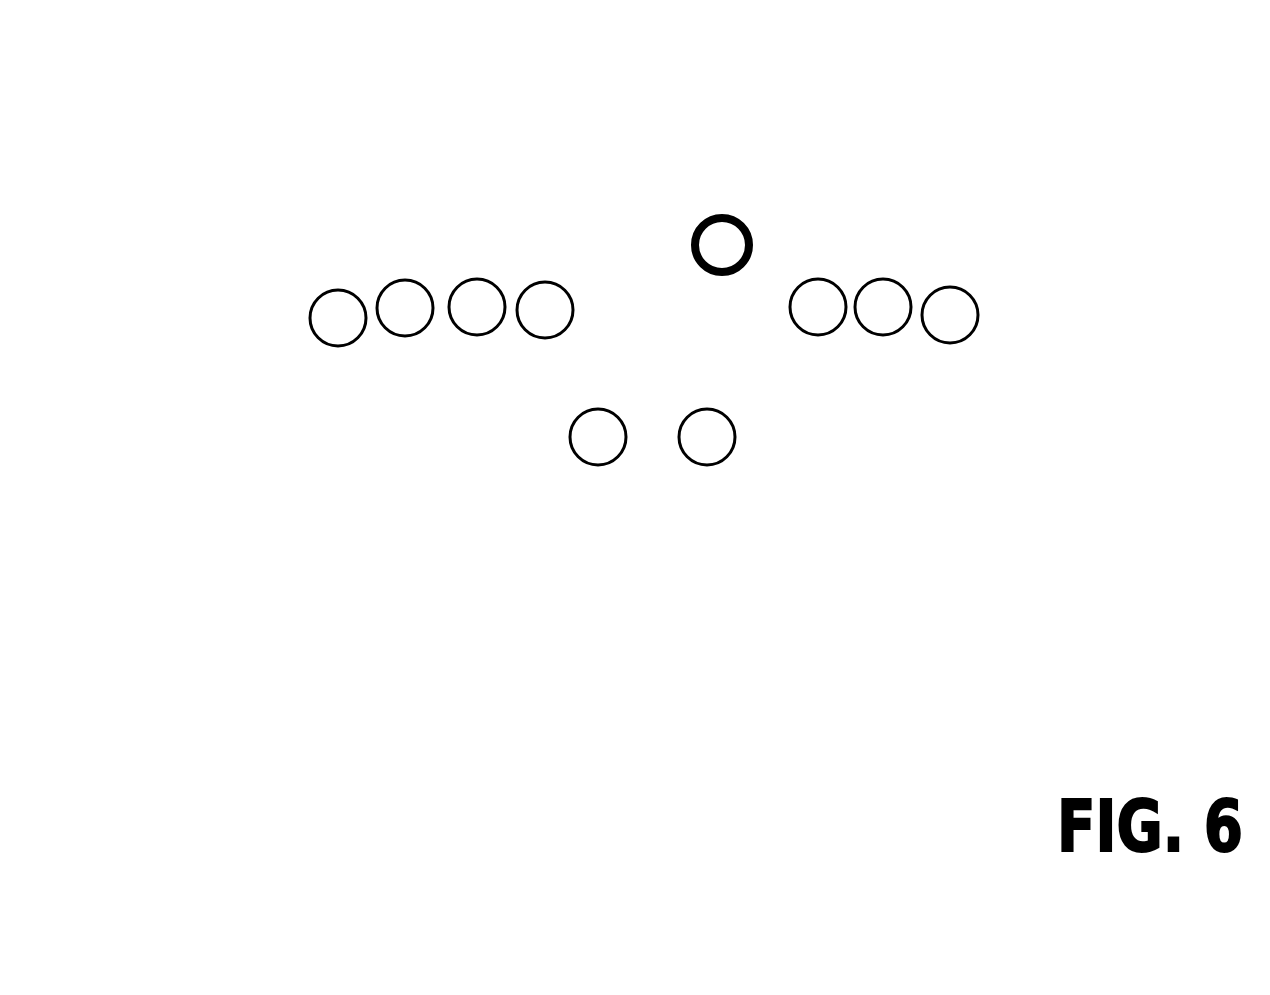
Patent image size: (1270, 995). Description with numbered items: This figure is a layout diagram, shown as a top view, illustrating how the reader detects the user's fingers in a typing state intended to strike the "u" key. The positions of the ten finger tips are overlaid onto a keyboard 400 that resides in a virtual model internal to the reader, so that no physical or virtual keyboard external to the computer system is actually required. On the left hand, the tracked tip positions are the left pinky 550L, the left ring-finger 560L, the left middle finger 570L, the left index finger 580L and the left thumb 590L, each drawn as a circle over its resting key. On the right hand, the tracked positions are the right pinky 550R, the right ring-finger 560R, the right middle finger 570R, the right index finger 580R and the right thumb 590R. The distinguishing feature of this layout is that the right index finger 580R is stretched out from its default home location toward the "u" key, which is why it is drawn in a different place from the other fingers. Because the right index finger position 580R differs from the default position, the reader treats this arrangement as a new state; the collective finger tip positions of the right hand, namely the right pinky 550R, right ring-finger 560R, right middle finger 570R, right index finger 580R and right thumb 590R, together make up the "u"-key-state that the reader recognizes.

The keyboard 400 is at (178, 313).
The left pinky 550L is at (317, 288).
The left ring-finger 560L is at (398, 268).
The left middle finger 570L is at (475, 262).
The left index finger 580L is at (543, 267).
The right index finger 580R is at (740, 207).
The right middle finger 570R is at (813, 260).
The right ring-finger 560R is at (885, 270).
The right pinky 550R is at (962, 273).
The left thumb 590L is at (570, 452).
The right thumb 590R is at (743, 448).